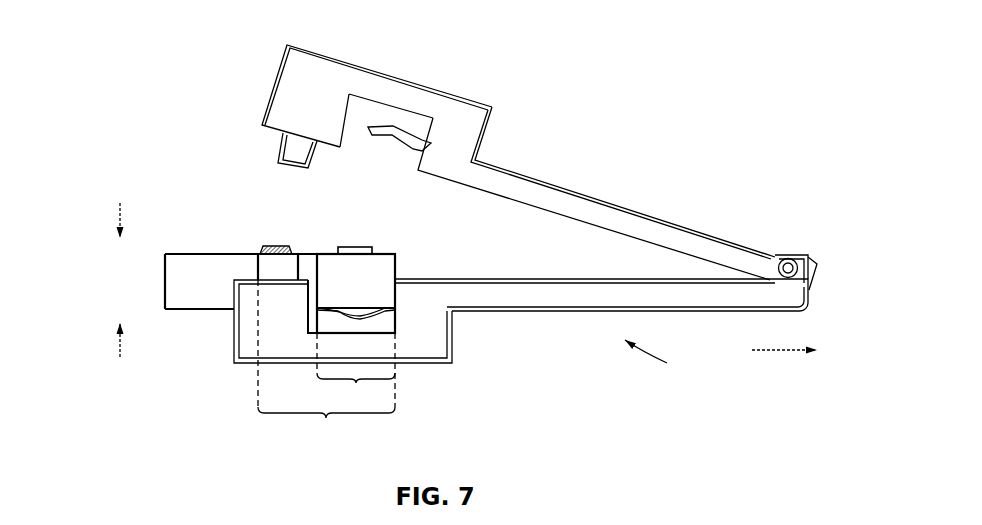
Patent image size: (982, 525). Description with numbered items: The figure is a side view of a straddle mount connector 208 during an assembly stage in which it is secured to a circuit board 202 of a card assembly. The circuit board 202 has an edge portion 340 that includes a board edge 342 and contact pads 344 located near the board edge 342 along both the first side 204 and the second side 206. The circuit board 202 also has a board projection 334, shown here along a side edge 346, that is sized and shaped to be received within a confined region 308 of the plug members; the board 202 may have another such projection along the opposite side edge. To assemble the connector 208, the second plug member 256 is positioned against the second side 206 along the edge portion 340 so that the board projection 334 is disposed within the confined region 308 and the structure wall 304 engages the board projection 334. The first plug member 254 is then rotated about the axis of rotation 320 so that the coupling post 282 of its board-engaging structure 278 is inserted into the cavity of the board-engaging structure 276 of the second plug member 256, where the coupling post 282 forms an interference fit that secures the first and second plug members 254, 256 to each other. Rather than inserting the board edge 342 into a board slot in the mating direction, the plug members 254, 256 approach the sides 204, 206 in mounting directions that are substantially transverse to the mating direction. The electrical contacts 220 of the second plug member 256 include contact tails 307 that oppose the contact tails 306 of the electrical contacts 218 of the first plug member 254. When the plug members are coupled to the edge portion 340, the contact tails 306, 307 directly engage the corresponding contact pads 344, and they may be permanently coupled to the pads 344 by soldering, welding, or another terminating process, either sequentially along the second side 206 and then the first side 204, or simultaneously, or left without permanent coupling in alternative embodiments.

The circuit board 202 is at (169, 253).
The first side 204 is at (186, 252).
The second side 206 is at (180, 316).
The straddle mount connector 208 is at (758, 88).
The electrical contacts 218 is at (426, 138).
The electrical contacts 220 is at (388, 316).
The first plug member 254 is at (697, 193).
The second plug member 256 is at (666, 360).
The board-engaging structure 276 is at (273, 320).
The board-engaging structure 278 is at (313, 90).
The coupling post 282 is at (280, 149).
The structure wall 304 is at (321, 293).
The contact tails 306 is at (383, 128).
The contact tails 307 is at (370, 316).
The confined region 308 is at (412, 118).
The axis of rotation 320 is at (791, 259).
The board projection 334 is at (356, 373).
The edge portion 340 is at (326, 366).
The board edge 342 is at (395, 258).
The contact pads 344 is at (356, 246).
The side edge 346 is at (205, 270).